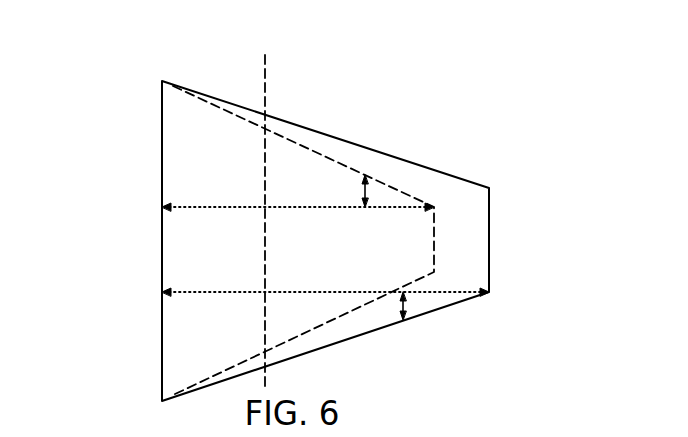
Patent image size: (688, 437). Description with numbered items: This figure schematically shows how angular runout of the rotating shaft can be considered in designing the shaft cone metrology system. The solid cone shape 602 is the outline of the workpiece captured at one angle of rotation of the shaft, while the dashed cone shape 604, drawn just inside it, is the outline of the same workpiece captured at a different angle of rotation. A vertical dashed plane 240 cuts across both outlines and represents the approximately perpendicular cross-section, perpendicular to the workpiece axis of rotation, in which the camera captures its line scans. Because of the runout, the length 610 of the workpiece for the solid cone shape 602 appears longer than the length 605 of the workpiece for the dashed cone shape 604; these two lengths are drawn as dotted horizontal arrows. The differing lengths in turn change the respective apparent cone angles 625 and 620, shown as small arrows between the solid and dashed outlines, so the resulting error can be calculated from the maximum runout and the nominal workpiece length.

The solid cone shape 602 is at (162, 127).
The dashed cone shape 604 is at (203, 380).
The length 605 is at (195, 207).
The length 610 is at (188, 290).
The dashed plane 240 is at (265, 85).
The apparent cone angle 620 is at (367, 190).
The apparent cone angle 625 is at (406, 303).